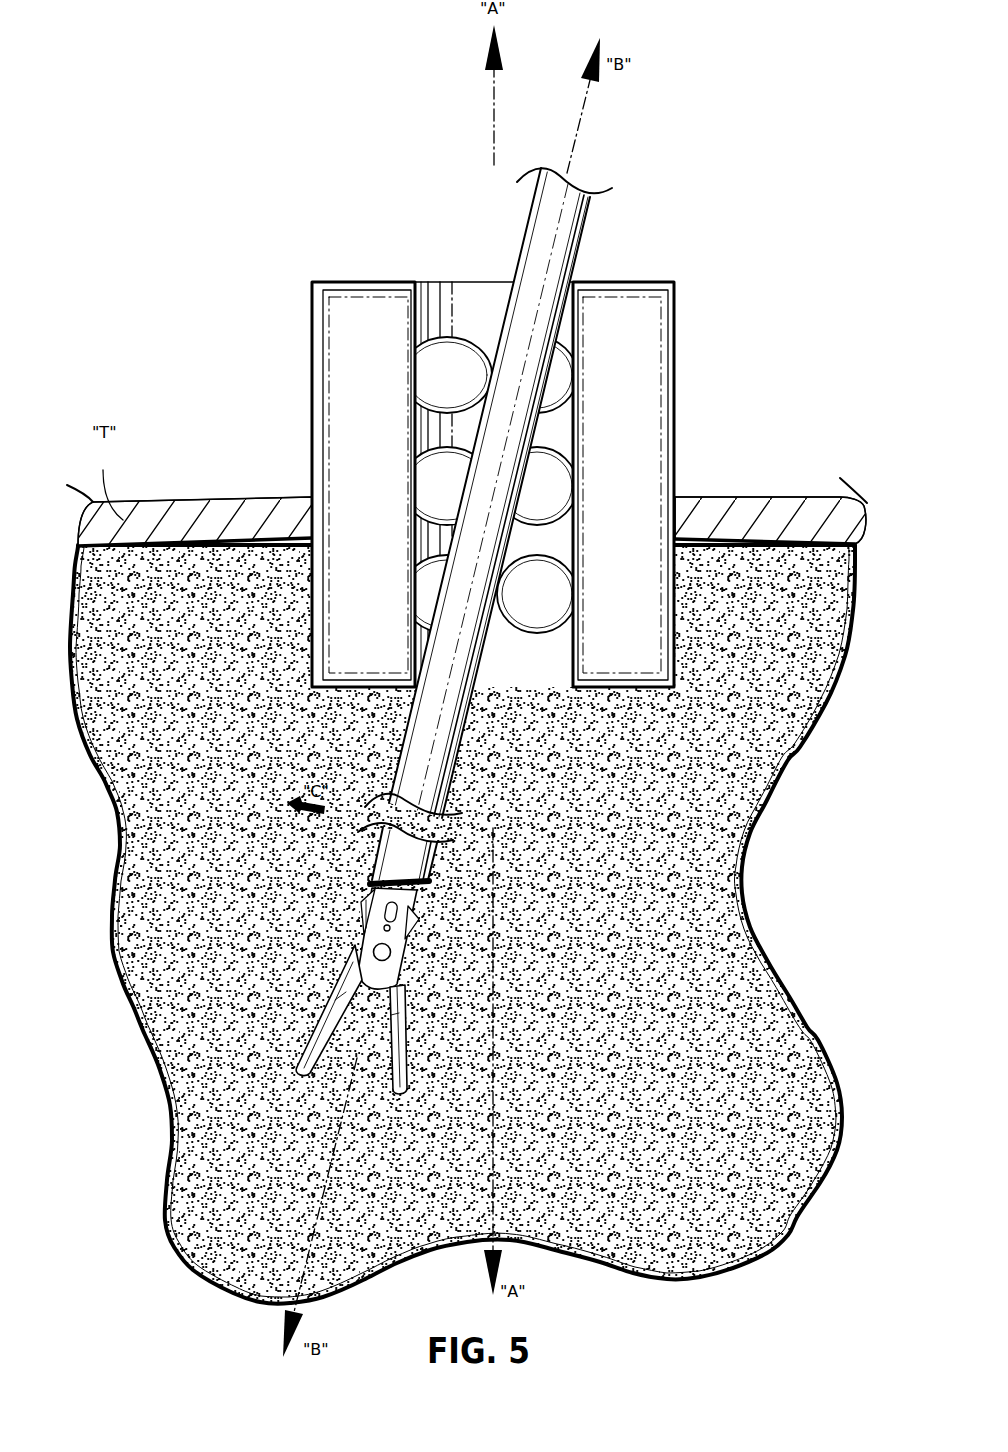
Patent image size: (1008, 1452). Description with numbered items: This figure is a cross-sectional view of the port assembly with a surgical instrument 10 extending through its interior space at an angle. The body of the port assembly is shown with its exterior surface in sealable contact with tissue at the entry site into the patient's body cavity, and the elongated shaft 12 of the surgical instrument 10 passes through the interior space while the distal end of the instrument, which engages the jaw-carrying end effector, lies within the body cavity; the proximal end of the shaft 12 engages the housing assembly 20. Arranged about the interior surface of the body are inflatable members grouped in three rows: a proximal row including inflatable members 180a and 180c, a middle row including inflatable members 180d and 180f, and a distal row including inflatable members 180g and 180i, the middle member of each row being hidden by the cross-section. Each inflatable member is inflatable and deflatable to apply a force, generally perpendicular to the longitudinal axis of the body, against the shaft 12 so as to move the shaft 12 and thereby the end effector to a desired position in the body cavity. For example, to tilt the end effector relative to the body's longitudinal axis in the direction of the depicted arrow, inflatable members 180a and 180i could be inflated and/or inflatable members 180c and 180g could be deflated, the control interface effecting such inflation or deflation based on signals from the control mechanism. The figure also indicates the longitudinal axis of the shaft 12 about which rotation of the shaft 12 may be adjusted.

The surgical instrument 10 is at (433, 626).
The shaft 12 is at (538, 247).
The housing assembly 20 is at (314, 950).
The inflatable member 180a is at (445, 368).
The inflatable member 180c is at (565, 370).
The inflatable member 180d is at (432, 487).
The inflatable member 180f is at (556, 487).
The inflatable member 180g is at (422, 597).
The inflatable member 180i is at (548, 600).